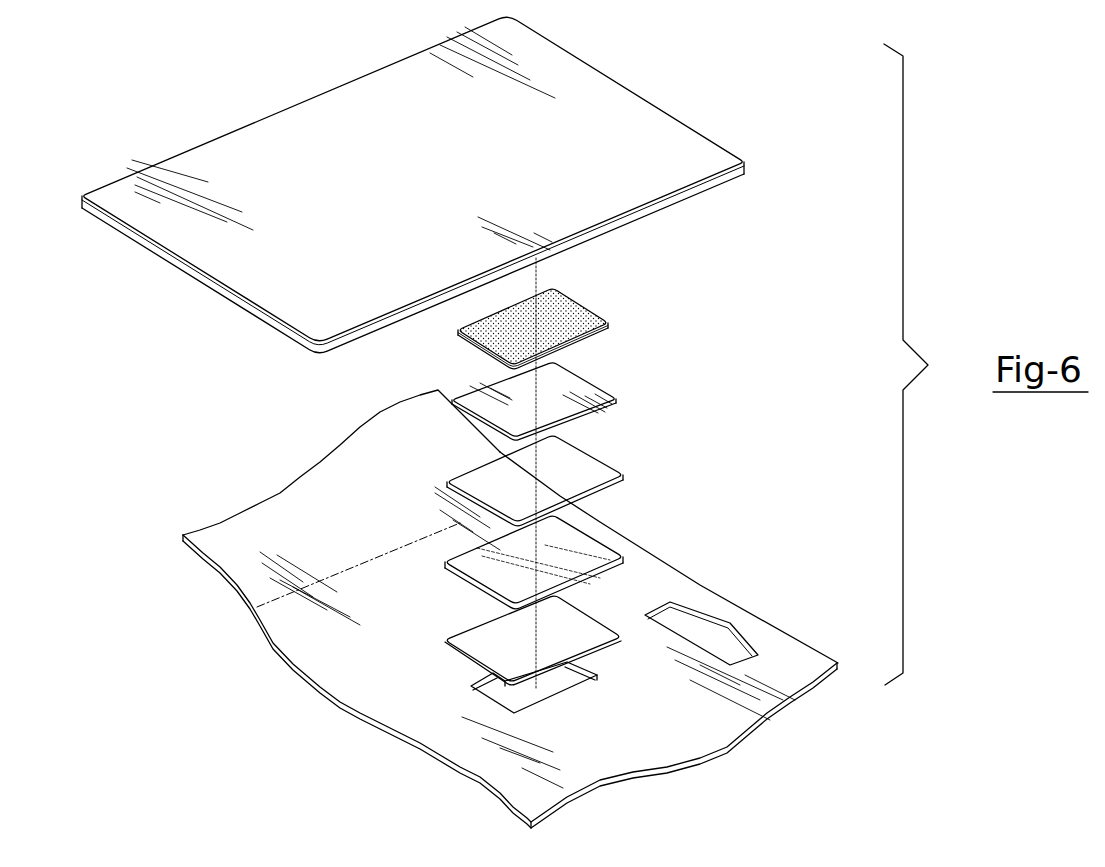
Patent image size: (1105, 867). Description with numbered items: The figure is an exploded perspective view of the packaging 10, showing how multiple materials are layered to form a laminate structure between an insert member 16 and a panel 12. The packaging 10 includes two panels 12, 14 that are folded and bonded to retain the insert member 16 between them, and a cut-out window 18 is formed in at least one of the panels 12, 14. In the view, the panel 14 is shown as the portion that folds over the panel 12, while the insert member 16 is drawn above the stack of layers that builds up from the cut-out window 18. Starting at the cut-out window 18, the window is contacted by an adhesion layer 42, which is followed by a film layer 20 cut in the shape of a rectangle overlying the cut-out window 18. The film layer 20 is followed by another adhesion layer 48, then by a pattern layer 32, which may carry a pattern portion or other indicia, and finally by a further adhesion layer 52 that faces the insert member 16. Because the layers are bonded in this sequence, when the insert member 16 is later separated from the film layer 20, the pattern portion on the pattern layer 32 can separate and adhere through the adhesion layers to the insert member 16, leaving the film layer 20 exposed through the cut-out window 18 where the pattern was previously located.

The packaging 10 is at (128, 108).
The panel 12 is at (780, 640).
The panel 14 is at (233, 532).
The insert member 16 is at (687, 133).
The cut-out window 18 is at (545, 692).
The film layer 20 is at (623, 557).
The pattern layer 32 is at (616, 399).
The adhesion layer 42 is at (445, 640).
The adhesion layer 48 is at (623, 475).
The adhesion layer 52 is at (609, 323).